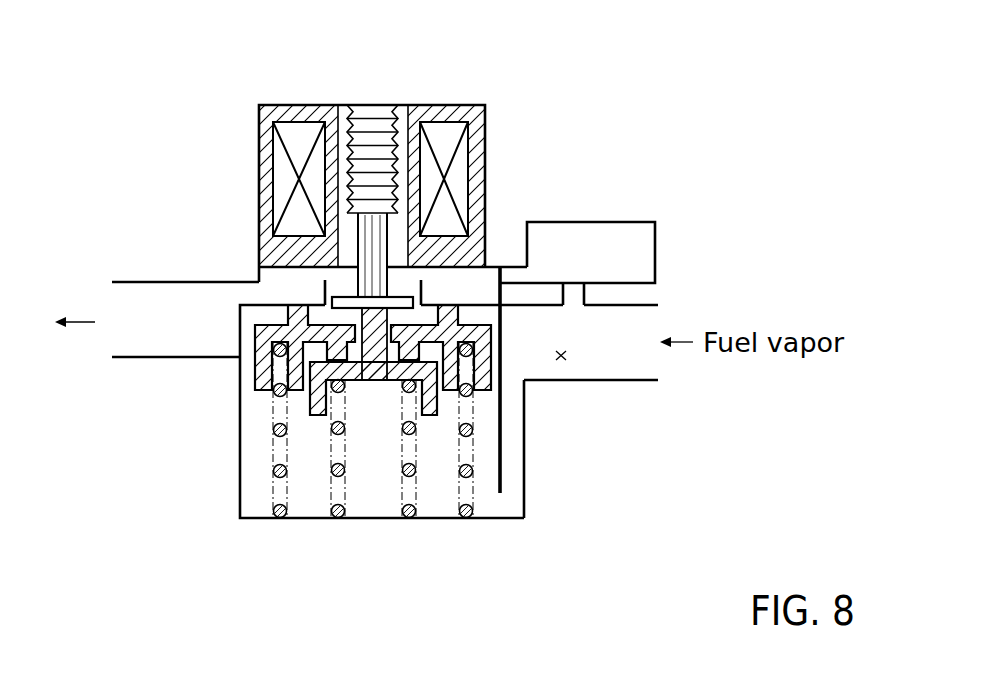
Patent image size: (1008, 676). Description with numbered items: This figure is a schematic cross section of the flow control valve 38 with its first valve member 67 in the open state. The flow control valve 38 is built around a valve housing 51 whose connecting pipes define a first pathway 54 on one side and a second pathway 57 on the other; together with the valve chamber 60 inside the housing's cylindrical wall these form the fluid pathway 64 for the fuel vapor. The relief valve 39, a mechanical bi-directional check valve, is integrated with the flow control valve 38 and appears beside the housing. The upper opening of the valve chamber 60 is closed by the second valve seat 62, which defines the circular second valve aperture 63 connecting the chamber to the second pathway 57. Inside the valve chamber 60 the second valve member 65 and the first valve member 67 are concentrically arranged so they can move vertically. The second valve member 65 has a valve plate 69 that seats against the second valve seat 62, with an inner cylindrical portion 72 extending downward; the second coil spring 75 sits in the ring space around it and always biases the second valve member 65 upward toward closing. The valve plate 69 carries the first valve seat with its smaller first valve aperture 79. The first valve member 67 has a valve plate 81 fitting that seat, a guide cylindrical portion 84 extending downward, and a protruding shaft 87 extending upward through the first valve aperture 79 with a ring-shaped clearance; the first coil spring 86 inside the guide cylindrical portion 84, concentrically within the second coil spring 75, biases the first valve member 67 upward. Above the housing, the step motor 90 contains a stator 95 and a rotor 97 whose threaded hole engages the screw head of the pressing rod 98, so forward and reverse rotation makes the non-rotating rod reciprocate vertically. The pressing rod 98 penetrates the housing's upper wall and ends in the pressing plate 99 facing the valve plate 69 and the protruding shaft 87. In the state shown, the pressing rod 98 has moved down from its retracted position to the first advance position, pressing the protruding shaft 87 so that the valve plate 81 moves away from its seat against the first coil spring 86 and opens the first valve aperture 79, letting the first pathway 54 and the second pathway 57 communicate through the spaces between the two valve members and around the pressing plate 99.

The flow control valve 38 is at (470, 92).
The relief valve 39 is at (612, 221).
The valve housing 51 is at (527, 488).
The first pathway 54 is at (621, 367).
The second pathway 57 is at (155, 342).
The valve chamber 60 is at (254, 500).
The second valve seat 62 is at (248, 304).
The second valve aperture 63 is at (330, 293).
The fluid pathway 64 is at (562, 360).
The second valve member 65 is at (254, 368).
The first valve member 67 is at (365, 380).
The valve plate 69 is at (420, 328).
The inner cylindrical portion 72 is at (296, 382).
The second coil spring 75 is at (273, 432).
The first valve aperture 79 is at (387, 383).
The valve plate 81 is at (408, 365).
The guide cylindrical portion 84 is at (320, 418).
The first coil spring 86 is at (332, 468).
The protruding shaft 87 is at (397, 313).
The step motor 90 is at (487, 128).
The stator 95 is at (295, 113).
The rotor 97 is at (386, 118).
The pressing rod 98 is at (390, 238).
The pressing plate 99 is at (347, 297).